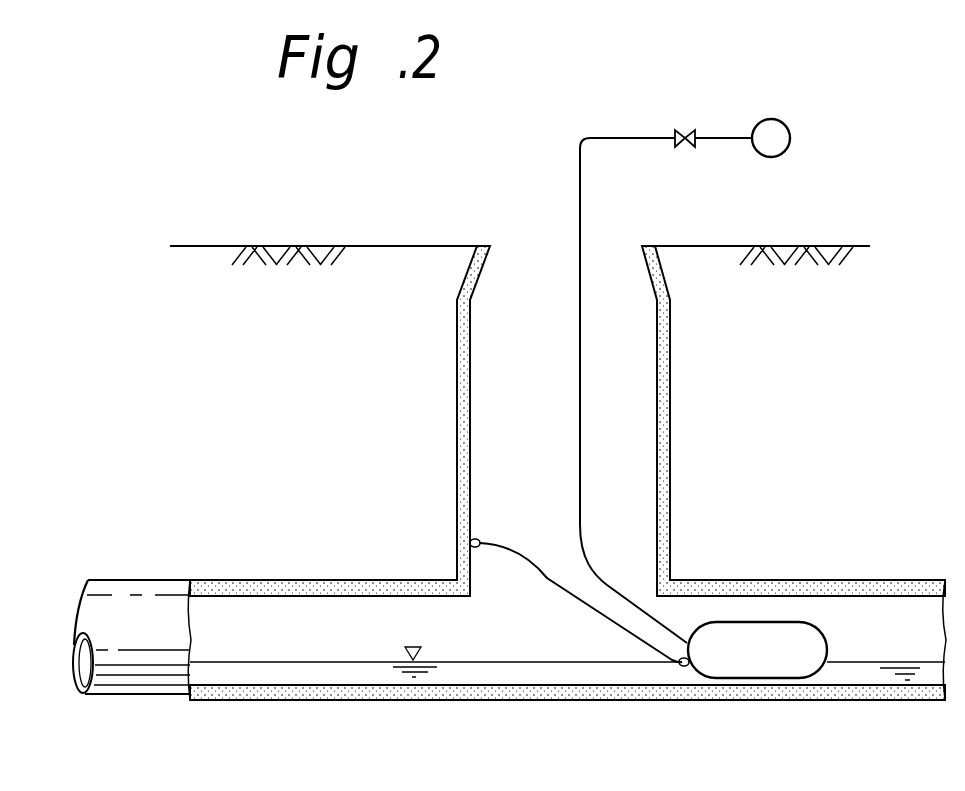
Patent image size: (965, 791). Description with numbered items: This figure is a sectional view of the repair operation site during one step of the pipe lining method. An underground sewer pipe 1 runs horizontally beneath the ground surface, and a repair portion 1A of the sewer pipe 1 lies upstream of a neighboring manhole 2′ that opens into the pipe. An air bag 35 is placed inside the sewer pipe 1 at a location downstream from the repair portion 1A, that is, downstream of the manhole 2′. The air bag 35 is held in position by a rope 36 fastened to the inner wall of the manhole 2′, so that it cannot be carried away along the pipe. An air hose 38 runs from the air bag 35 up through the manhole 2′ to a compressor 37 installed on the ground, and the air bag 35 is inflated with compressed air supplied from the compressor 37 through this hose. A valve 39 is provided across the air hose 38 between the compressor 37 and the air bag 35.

The sewer pipe 1 is at (742, 580).
The repair portion 1A is at (300, 594).
The manhole 2′ is at (532, 371).
The air bag 35 is at (828, 646).
The rope 36 is at (549, 580).
The compressor 37 is at (790, 137).
The air hose 38 is at (580, 470).
The valve 39 is at (677, 130).